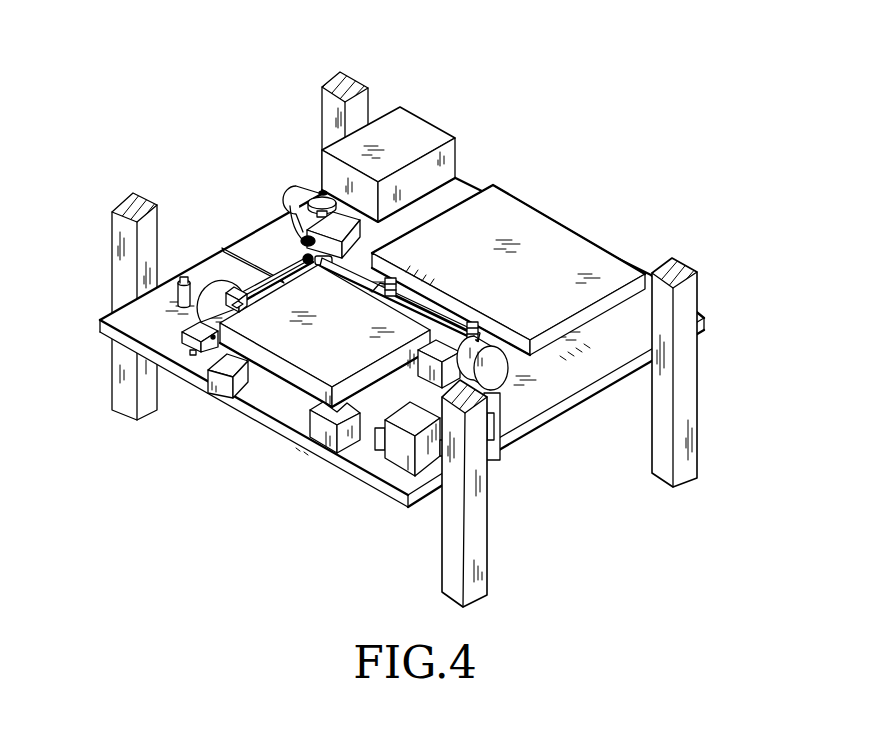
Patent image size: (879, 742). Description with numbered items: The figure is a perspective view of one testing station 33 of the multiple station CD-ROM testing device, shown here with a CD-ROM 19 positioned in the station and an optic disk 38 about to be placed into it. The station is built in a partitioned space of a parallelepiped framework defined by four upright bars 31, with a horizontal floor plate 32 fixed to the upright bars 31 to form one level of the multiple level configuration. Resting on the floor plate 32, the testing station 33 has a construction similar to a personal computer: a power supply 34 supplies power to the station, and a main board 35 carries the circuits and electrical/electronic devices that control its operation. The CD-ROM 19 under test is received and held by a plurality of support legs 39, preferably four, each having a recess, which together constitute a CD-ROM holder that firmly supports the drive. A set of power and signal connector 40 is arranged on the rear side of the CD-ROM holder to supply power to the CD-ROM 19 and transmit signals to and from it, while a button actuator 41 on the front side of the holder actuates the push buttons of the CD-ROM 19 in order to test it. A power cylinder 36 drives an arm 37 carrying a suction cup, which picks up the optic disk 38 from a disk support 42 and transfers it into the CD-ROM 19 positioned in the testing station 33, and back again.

The CD-ROM 19 is at (300, 383).
The upright bars 31 is at (478, 553).
The horizontal floor plates 32 is at (548, 393).
The testing station 33 is at (634, 127).
The power supply 34 is at (407, 130).
The main board 35 is at (582, 252).
The power cylinder 36 is at (498, 395).
The arm 37 is at (283, 262).
The optic disk 38 is at (213, 297).
The support legs 39 is at (442, 343).
The power and signal connector 40 is at (392, 445).
The button actuator 41 is at (193, 336).
The disk support 42 is at (178, 298).